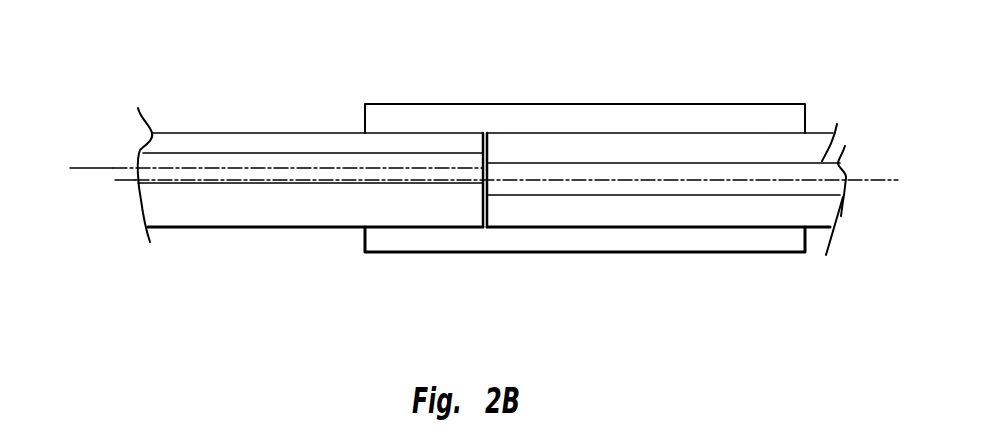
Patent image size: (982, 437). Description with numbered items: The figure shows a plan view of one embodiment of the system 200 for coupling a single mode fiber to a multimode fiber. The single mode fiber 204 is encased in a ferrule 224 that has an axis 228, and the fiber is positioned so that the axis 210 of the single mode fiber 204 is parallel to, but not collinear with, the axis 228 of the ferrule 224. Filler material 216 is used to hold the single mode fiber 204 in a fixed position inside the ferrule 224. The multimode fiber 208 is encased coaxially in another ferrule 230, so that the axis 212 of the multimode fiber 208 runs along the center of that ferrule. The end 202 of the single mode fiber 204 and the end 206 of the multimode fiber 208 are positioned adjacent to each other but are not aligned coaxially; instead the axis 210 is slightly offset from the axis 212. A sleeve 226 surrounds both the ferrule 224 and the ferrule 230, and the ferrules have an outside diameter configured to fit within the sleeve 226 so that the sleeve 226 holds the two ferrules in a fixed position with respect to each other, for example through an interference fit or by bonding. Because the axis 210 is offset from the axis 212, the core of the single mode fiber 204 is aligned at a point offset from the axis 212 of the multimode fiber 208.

The system 200 is at (460, 184).
The end of single mode fiber 202 is at (483, 160).
The single mode fiber 204 is at (333, 147).
The end of multimode fiber 206 is at (483, 160).
The multimode fiber 208 is at (769, 163).
The axis of single mode fiber 210 is at (112, 169).
The axis of multimode fiber 212 is at (757, 181).
The filler material 216 is at (277, 208).
The ferrule 224 is at (180, 230).
The sleeve 226 is at (578, 243).
The axis of ferrule 228 is at (127, 182).
The ferrule 230 is at (630, 132).